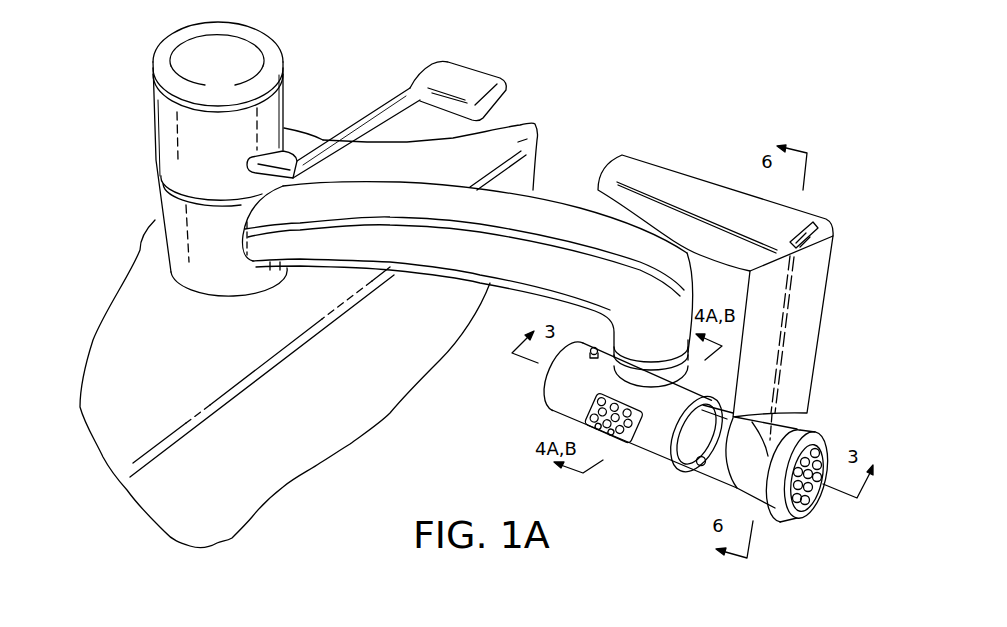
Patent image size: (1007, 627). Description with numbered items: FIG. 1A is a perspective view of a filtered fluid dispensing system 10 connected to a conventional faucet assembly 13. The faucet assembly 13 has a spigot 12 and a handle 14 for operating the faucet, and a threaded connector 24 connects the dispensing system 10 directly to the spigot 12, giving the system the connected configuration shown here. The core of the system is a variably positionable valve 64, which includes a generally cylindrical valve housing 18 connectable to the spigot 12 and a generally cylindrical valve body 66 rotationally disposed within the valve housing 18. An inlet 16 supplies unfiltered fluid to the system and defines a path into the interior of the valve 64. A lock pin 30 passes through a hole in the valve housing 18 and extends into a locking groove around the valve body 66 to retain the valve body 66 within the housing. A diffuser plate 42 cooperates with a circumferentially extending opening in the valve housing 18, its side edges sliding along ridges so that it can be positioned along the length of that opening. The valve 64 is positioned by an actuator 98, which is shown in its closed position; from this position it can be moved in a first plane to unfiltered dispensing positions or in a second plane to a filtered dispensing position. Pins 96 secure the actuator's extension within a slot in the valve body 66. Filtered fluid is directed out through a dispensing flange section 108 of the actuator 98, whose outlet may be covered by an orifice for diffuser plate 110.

The dispensing system 10 is at (840, 345).
The spigot 12 is at (433, 253).
The faucet assembly 13 is at (549, 57).
The lever handle 14 is at (462, 78).
The inlet 16 is at (659, 353).
The valve housing 18 is at (653, 450).
The threaded connector 24 is at (630, 367).
The lock pin 30 is at (594, 347).
The diffuser plate 42 is at (626, 443).
The valve 64 is at (567, 395).
The valve body 66 is at (775, 415).
The pins 96 is at (699, 466).
The actuator 98 is at (707, 193).
The dispensing flange section 108 is at (769, 514).
The orifice for diffuser plate 110 is at (806, 498).